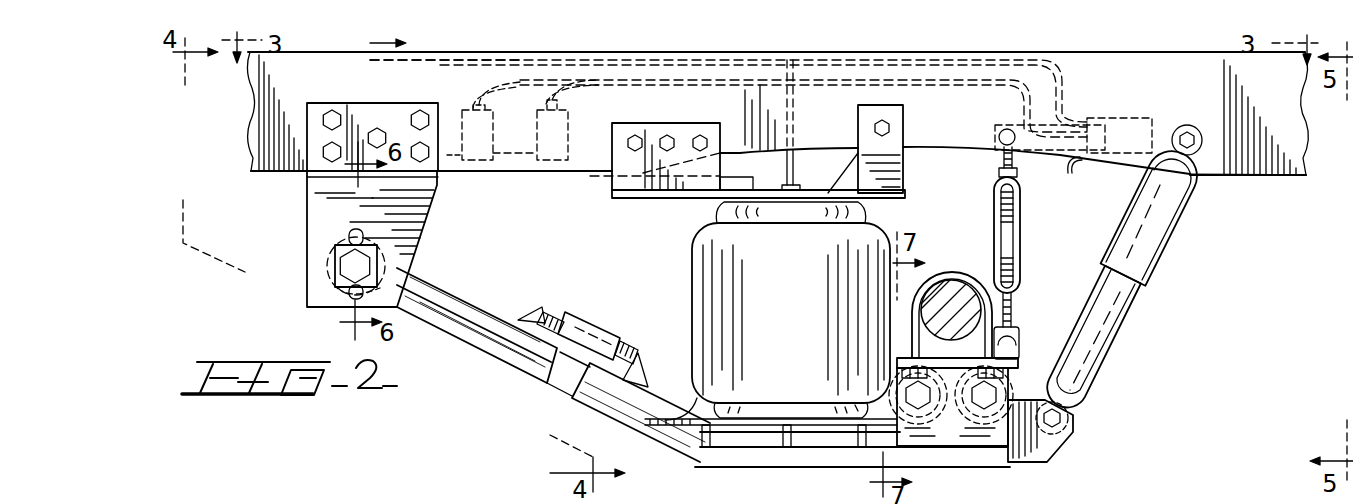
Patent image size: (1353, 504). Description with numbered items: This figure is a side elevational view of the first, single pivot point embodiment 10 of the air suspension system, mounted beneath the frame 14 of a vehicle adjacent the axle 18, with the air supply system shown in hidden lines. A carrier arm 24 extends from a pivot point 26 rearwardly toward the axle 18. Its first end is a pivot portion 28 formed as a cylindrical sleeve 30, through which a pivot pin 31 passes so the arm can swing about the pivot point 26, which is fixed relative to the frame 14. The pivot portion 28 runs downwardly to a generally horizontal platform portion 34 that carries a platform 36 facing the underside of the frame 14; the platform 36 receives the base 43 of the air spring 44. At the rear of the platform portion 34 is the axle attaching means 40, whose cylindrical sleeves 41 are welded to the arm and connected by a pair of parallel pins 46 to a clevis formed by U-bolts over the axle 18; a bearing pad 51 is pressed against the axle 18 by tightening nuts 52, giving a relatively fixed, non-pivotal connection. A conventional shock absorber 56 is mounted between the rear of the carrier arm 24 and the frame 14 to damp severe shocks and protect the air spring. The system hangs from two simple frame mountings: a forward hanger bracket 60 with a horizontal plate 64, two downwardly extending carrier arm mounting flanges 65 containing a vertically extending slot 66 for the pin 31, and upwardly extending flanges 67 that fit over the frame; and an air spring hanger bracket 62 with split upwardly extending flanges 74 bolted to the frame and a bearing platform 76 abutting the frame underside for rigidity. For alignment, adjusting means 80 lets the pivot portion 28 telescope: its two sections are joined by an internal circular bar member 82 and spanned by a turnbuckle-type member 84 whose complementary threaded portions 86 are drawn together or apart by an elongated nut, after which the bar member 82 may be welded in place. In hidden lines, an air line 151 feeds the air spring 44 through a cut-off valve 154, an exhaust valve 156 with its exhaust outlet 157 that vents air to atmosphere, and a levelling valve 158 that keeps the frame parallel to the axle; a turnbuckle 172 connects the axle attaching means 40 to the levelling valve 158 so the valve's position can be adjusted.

The first embodiment 10 is at (1065, 454).
The frame 14 is at (1226, 164).
The axle 18 is at (960, 314).
The carrier arm 24 is at (480, 306).
The pivot point 26 is at (374, 264).
The pivot portion 28 is at (318, 288).
The cylindrical sleeve 30 is at (326, 276).
The pivot pin 31 is at (350, 260).
The platform portion 34 is at (733, 448).
The platform 36 is at (808, 420).
The axle attaching means 40 is at (1016, 378).
The cylindrical sleeves 41 is at (922, 428).
The base 43 is at (692, 406).
The air spring 44 is at (707, 300).
The pins 46 is at (990, 401).
The bearing pad 51 is at (968, 346).
The nuts 52 is at (1005, 369).
The shock absorber 56 is at (1150, 276).
The forward hanger bracket 60 is at (418, 200).
The air spring hanger bracket 62 is at (668, 192).
The horizontal plate 64 is at (325, 174).
The carrier arm mounting flanges 65 is at (418, 228).
The vertically extending slot 66 is at (353, 236).
The upwardly extending flanges 67 is at (318, 121).
The upwardly extending flanges 74 is at (722, 133).
The bearing platform 76 is at (740, 177).
The adjusting means 80 is at (593, 308).
The internal circular bar member 82 is at (572, 376).
The turnbuckle-type member 84 is at (611, 326).
The threaded portions 86 is at (550, 315).
The air line 151 is at (513, 62).
The cut-off valve 154 is at (562, 118).
The exhaust valve 156 is at (465, 108).
The exhaust outlet 157 is at (450, 153).
The levelling valve 158 is at (1117, 128).
The turnbuckle 172 is at (996, 196).